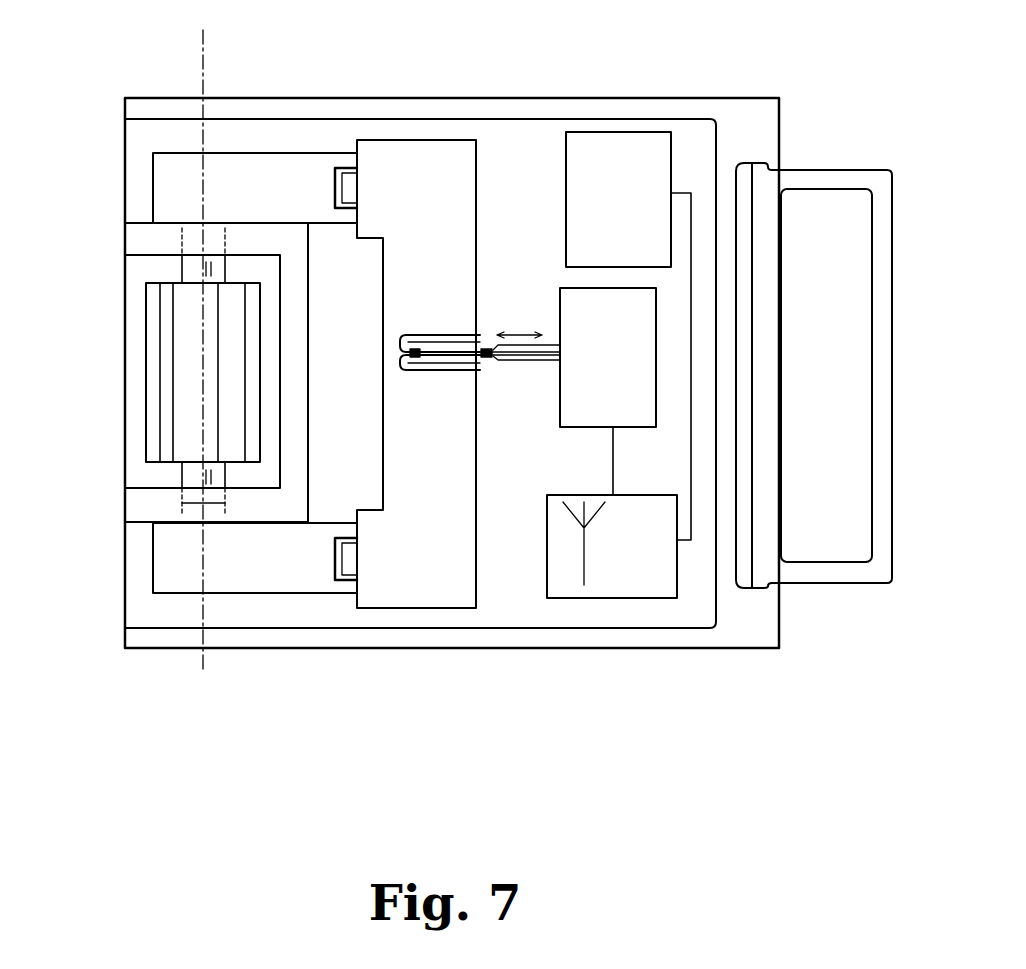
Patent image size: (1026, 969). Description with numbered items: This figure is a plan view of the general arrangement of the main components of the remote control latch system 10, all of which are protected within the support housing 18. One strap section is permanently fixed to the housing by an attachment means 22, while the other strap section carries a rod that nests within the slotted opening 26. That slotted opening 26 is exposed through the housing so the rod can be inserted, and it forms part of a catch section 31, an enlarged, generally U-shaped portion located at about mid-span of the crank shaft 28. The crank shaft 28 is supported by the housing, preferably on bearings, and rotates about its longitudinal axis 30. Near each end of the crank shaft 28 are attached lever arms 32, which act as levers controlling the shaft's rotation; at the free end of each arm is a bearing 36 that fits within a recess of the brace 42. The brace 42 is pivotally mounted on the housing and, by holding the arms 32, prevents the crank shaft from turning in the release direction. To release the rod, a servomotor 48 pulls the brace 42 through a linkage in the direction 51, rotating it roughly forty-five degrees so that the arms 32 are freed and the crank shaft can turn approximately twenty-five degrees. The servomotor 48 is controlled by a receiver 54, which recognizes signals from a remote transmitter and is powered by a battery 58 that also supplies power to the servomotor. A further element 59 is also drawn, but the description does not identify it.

The remote control latch system 10 is at (673, 763).
The support housing 18 is at (465, 650).
The attachment means 22 is at (893, 560).
The slotted opening 26 is at (175, 427).
The crank shaft 28 is at (182, 262).
The longitudinal axis 30 is at (205, 675).
The catch section 31 is at (146, 366).
The lever arms 32 is at (249, 208).
The bearing 36 is at (340, 180).
The brace 42 is at (447, 318).
The servomotor 48 is at (619, 358).
The direction 51 is at (508, 335).
The receiver 54 is at (647, 570).
The battery 58 is at (631, 212).
The wire 59 is at (613, 458).